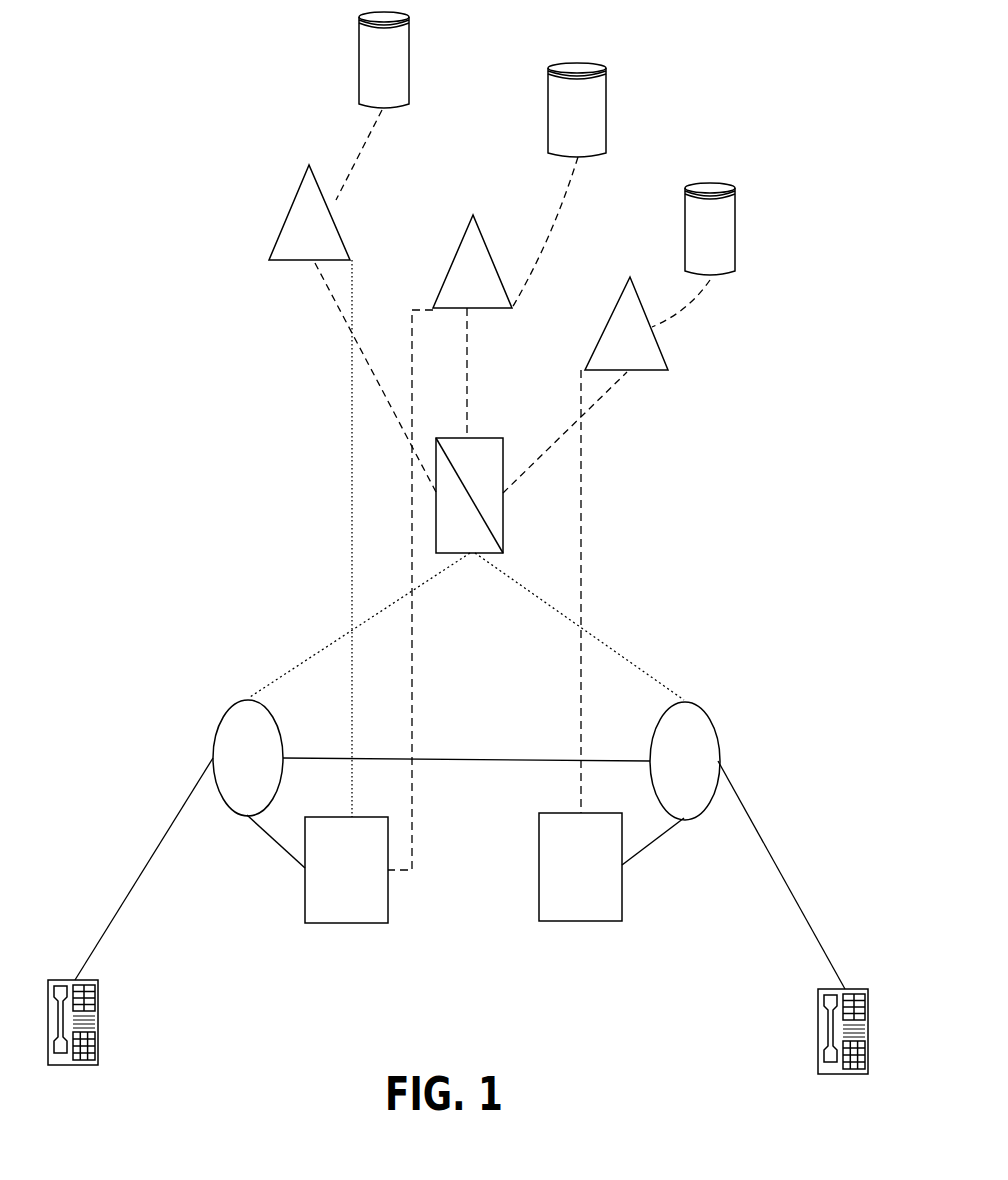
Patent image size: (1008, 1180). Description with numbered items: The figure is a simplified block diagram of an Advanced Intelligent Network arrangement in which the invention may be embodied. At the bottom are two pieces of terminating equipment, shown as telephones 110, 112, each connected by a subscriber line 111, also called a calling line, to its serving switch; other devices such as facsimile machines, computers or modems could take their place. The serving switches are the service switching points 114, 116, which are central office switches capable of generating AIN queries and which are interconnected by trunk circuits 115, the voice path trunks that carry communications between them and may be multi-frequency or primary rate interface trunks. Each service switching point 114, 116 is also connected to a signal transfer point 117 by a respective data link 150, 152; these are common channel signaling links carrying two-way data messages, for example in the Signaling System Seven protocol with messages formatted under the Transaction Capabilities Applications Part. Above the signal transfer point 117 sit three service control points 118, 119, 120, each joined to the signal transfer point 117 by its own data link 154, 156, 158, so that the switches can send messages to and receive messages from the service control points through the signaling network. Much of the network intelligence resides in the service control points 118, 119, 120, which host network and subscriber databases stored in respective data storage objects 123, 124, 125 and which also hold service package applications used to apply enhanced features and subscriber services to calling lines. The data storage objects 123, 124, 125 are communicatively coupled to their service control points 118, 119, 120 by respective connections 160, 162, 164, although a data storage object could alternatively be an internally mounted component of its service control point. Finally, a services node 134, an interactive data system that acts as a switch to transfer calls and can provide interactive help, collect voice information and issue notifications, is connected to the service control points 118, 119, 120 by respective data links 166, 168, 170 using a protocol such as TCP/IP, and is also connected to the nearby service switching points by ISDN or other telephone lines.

The telephone 110 is at (73, 1037).
The subscriber line 111 is at (123, 904).
The telephone 112 is at (843, 1047).
The service switching point 114 is at (248, 758).
The trunk circuit 115 is at (468, 762).
The service switching point 116 is at (685, 761).
The signal transfer point 117 is at (503, 438).
The service control point 118 is at (309, 212).
The service control point 119 is at (472, 261).
The service control point 120 is at (626, 323).
The data storage object 123 is at (384, 60).
The data storage object 124 is at (577, 110).
The data storage object 125 is at (710, 229).
The services node 134 is at (465, 868).
The data link 150 is at (292, 670).
The data link 152 is at (600, 640).
The data link 154 is at (338, 305).
The data link 156 is at (465, 367).
The data link 158 is at (545, 485).
The connection SCP 118 to database 123 160 is at (368, 154).
The connection SCP 119 to database 124 162 is at (562, 227).
The connection SCP 120 to database 125 164 is at (685, 313).
The data link 166 is at (353, 485).
The data link 168 is at (410, 637).
The data link 170 is at (588, 535).